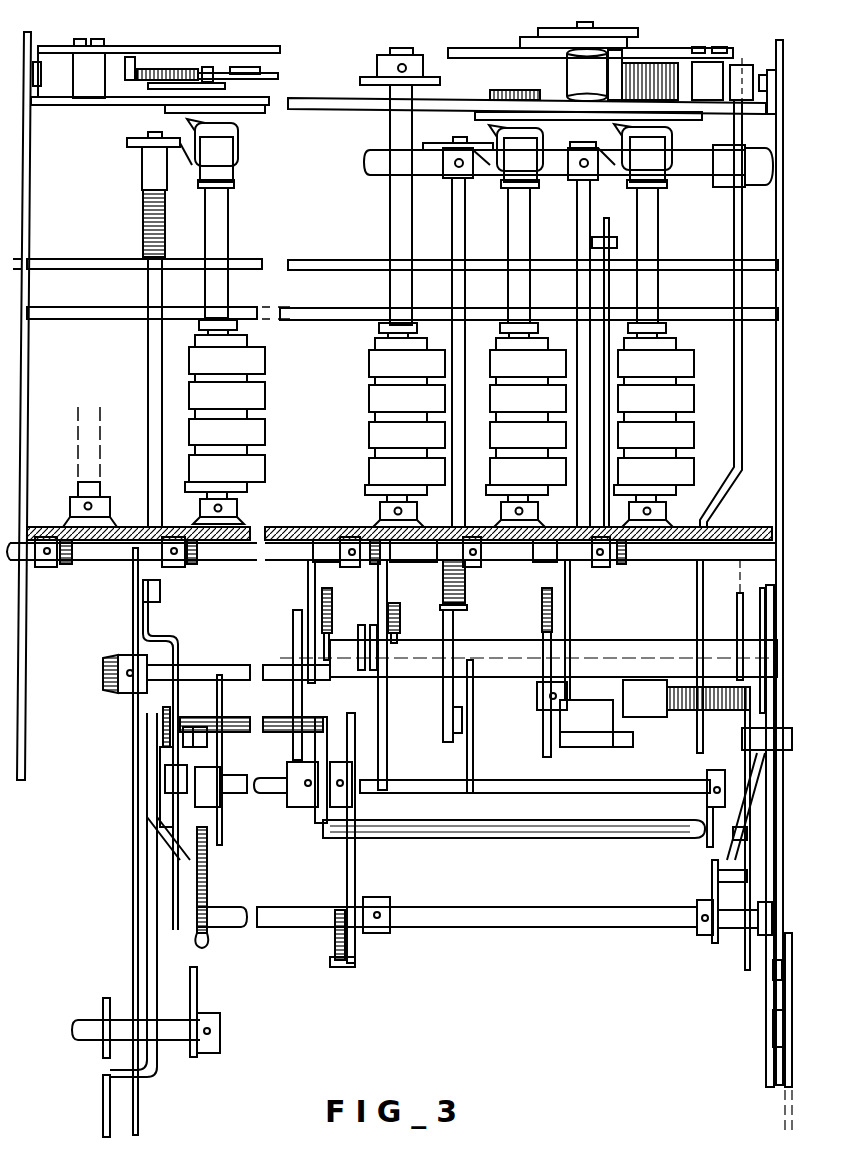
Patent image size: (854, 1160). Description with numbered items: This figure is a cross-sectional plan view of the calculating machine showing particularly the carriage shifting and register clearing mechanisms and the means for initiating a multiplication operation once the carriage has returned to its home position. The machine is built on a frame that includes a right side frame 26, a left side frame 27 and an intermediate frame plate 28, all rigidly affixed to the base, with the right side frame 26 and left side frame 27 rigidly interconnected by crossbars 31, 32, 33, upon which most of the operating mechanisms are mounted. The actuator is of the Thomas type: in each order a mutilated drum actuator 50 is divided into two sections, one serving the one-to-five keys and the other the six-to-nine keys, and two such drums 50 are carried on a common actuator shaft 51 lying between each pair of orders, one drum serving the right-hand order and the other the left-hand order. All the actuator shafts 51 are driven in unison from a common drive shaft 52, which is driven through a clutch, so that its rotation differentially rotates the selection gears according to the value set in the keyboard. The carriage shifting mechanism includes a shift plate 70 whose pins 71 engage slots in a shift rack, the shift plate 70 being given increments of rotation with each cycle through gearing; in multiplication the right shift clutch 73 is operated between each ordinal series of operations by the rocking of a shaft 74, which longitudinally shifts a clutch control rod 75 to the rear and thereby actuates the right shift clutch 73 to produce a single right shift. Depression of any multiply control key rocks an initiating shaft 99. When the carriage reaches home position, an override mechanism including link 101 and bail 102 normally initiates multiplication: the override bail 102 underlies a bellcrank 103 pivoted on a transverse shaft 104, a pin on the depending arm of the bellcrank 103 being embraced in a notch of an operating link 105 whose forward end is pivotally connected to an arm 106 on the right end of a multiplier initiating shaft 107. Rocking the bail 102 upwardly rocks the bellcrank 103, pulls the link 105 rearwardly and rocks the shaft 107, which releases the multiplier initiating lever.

The right side frame 26 is at (767, 988).
The left side frame 27 is at (27, 665).
The intermediate frame plate 28 is at (138, 1116).
The crossbar 31 is at (296, 527).
The crossbar 32 is at (330, 321).
The crossbar 33 is at (335, 104).
The mutilated drum actuator 50 is at (364, 402).
The actuator shaft 51 is at (393, 224).
The common drive shaft 52 is at (683, 562).
The shift plate 70 is at (645, 41).
The pins 71 is at (560, 72).
The right shift clutch 73 is at (679, 141).
The shaft 74 is at (523, 698).
The clutch control rod 75 is at (590, 218).
The initiating shaft 99 is at (280, 909).
The link 101 is at (738, 422).
The override bail 102 is at (238, 730).
The bellcrank 103 is at (222, 843).
The transverse shaft 104 is at (492, 779).
The operating link 105 is at (205, 957).
The arm 106 is at (190, 1050).
The multiplier initiating shaft 107 is at (177, 1020).